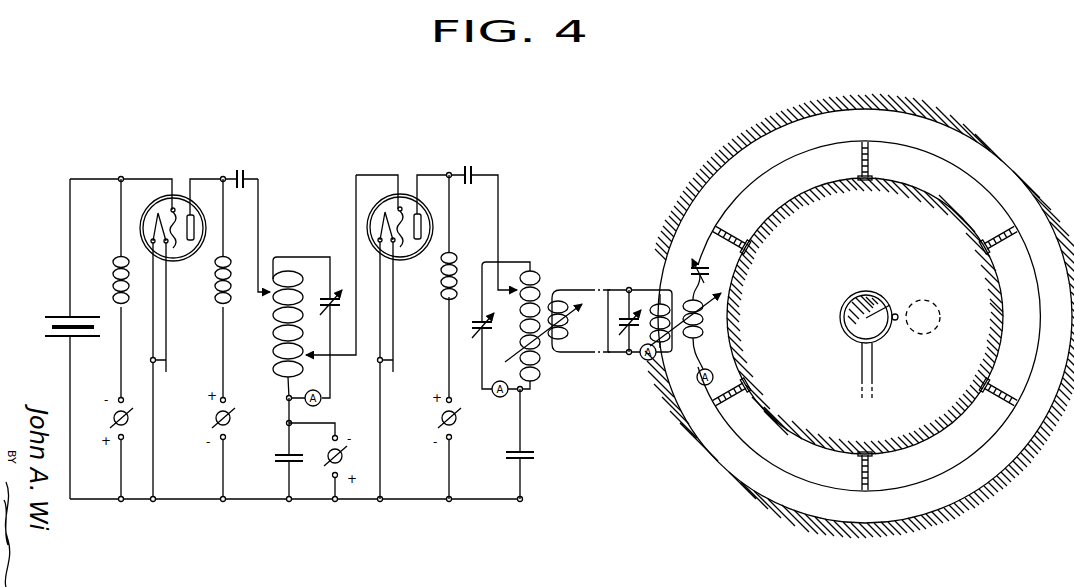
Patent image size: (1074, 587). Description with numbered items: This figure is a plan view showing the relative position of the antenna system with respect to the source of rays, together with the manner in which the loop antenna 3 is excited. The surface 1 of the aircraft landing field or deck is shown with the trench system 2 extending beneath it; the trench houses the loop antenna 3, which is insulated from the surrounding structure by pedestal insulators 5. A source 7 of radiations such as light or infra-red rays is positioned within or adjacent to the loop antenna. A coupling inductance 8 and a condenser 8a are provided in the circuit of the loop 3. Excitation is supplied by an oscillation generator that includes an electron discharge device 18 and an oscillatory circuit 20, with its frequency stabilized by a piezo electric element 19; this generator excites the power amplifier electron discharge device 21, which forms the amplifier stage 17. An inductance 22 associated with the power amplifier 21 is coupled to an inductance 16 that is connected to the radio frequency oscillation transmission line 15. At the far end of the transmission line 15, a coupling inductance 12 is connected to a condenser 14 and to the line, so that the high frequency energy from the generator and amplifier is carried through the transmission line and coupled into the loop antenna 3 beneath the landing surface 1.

The surface of the aircraft landing field or deck 1 is at (866, 265).
The trench system 2 is at (921, 167).
The loop antenna 3 is at (794, 476).
The pedestal insulators 5 is at (736, 406).
The source of radiations 7 is at (893, 303).
The coupling inductance 8 is at (698, 330).
The condenser 8a is at (720, 272).
The coupling inductance 12 is at (665, 346).
The condenser 14 is at (628, 346).
The radio frequency oscillation transmission line 15 is at (599, 304).
The inductance 16 is at (562, 348).
The amplifier stage 17 is at (305, 195).
The electron discharge device 18 is at (172, 196).
The piezo electric element 19 is at (52, 302).
The oscillatory circuit 20 is at (306, 272).
The power amplifier electron discharge device 21 is at (411, 193).
The inductance 22 is at (530, 257).